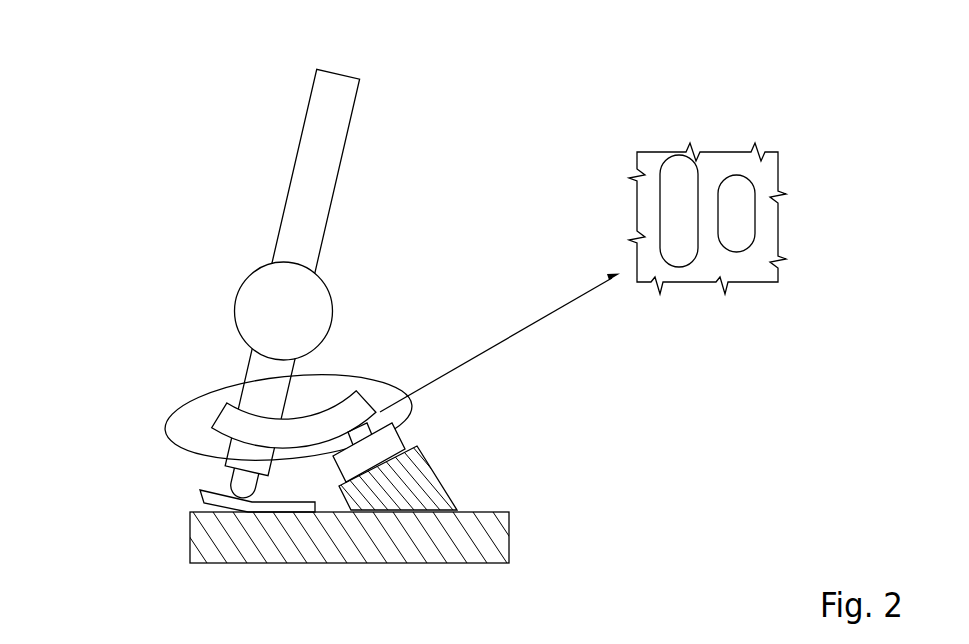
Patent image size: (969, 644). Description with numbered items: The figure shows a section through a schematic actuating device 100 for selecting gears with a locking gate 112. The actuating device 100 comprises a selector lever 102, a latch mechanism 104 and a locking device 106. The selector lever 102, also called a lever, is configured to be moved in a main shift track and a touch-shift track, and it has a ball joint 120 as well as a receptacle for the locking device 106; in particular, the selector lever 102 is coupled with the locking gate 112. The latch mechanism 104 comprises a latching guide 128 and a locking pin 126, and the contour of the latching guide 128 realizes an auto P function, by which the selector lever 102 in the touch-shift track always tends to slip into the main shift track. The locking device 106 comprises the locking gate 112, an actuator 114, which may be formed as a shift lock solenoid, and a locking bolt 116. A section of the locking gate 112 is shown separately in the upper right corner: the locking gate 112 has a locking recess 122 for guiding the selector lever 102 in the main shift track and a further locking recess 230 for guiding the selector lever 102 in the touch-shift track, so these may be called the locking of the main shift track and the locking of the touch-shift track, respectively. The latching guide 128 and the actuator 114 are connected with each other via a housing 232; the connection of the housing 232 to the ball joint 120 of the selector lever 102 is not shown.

The actuating device 100 is at (158, 234).
The selector lever 102 is at (317, 170).
The latch mechanism 104 is at (179, 511).
The locking device 106 is at (370, 350).
The locking gate 112 is at (548, 268).
The actuator 114 is at (392, 442).
The locking bolt 116 is at (358, 432).
The ball joint 120 is at (255, 306).
The locking recess 122 is at (678, 173).
The locking pin 126 is at (240, 484).
The latching guide 128 is at (205, 501).
The further locking recess 230 is at (737, 198).
The housing 232 is at (488, 538).